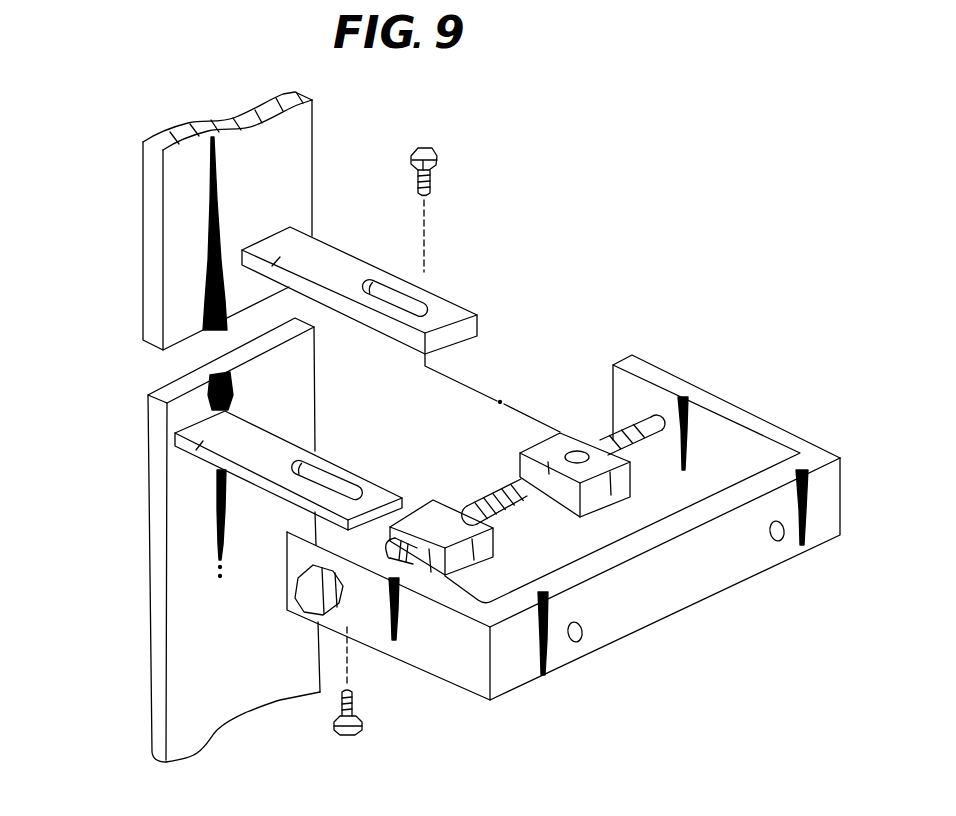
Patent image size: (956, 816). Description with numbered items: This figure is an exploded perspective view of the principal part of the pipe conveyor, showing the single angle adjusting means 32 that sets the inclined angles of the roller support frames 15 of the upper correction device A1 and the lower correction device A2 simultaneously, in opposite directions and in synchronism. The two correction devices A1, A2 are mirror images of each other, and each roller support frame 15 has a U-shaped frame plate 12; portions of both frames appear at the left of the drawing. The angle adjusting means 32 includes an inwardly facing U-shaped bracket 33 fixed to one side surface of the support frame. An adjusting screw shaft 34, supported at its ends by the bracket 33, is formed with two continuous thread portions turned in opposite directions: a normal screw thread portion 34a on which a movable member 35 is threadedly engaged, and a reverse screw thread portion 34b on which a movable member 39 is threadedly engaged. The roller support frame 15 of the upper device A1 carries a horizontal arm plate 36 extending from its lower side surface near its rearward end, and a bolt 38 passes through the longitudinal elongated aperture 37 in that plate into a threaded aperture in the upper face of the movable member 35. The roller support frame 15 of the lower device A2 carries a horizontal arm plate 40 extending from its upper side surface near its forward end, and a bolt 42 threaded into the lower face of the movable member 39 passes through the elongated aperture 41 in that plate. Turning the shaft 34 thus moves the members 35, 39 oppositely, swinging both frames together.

The U-shaped frame plate 12 is at (152, 622).
The roller support frame 15 is at (143, 316).
The angle adjusting means 32 is at (639, 202).
The U-shaped bracket 33 is at (677, 597).
The adjusting screw shaft 34 is at (517, 483).
The normal screw thread portion 34a is at (652, 412).
The reverse screw thread portion 34b is at (433, 566).
The movable member 35 is at (620, 494).
The horizontal arm plate 36 is at (357, 256).
The elongated aperture 37 is at (404, 297).
The bolt 38 is at (437, 157).
The movable member 39 is at (495, 542).
The horizontal arm plate 40 is at (210, 486).
The elongated aperture 41 is at (340, 478).
The bolt 42 is at (331, 731).
The upper correction device A1 is at (134, 252).
The lower correction device A2 is at (143, 436).